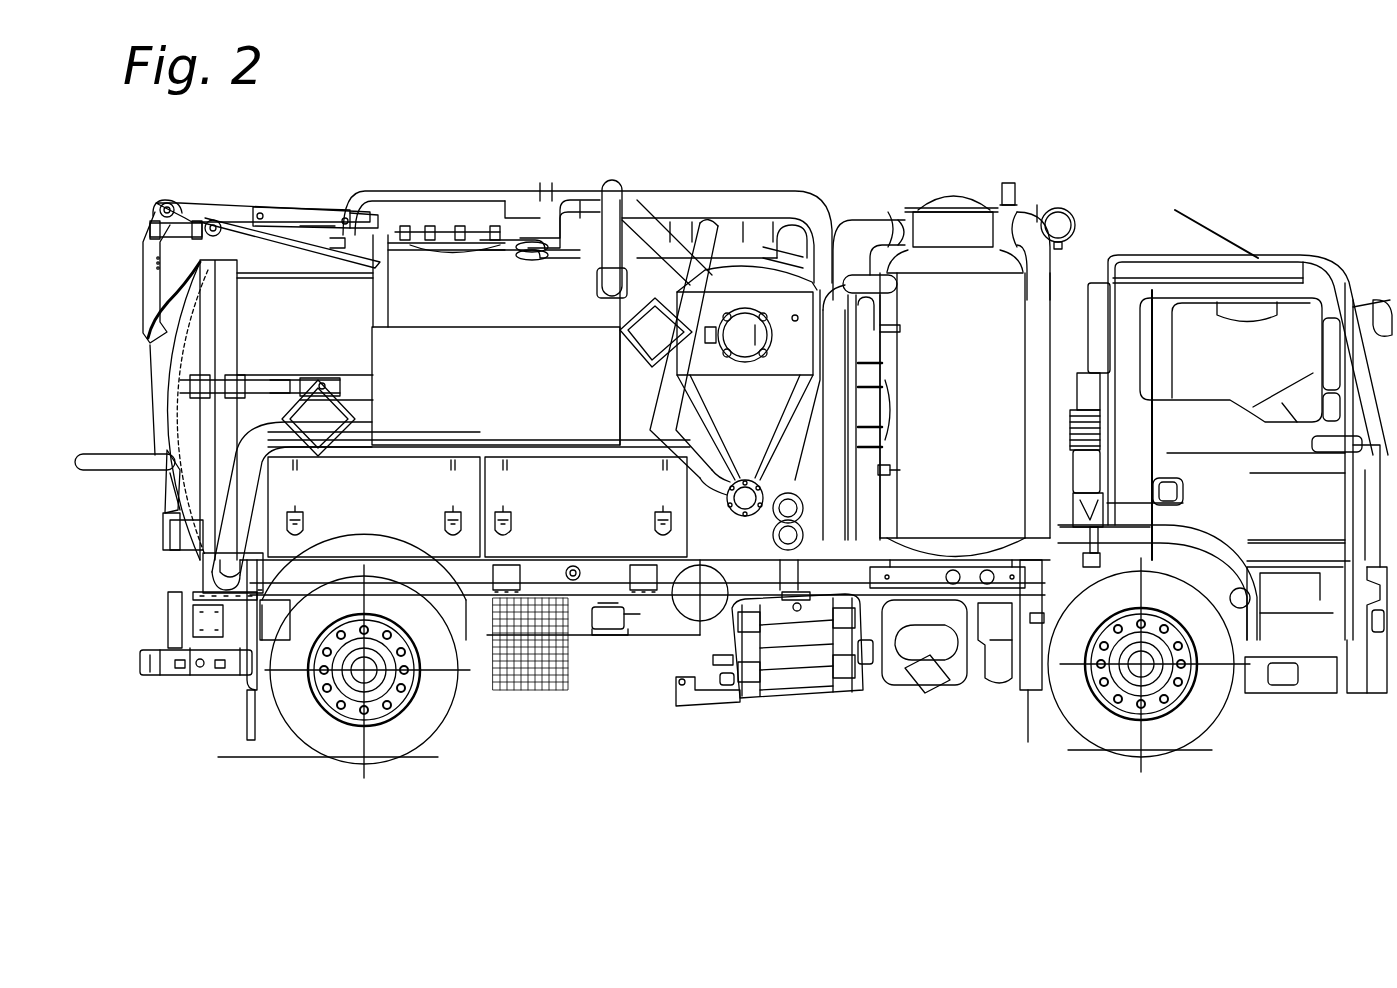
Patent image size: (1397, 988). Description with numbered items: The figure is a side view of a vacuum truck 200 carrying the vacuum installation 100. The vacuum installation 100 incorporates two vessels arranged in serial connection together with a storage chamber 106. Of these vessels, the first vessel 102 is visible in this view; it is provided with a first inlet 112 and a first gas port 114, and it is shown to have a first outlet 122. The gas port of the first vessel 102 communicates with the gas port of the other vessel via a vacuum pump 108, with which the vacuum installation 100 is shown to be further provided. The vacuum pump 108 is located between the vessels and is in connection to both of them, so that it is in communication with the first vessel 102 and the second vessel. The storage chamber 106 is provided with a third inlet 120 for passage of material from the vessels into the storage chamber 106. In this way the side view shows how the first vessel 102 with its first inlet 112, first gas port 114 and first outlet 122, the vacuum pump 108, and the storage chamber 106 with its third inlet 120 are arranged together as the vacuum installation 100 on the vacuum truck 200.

The vacuum installation 100 is at (428, 157).
The first vessel 102 is at (750, 278).
The storage chamber 106 is at (323, 310).
The vacuum pump 108 is at (803, 680).
The first inlet 112 is at (800, 256).
The first gas port 114 is at (733, 260).
The third inlet 120 is at (500, 265).
The first outlet 122 is at (733, 510).
The vacuum truck 200 is at (1306, 228).